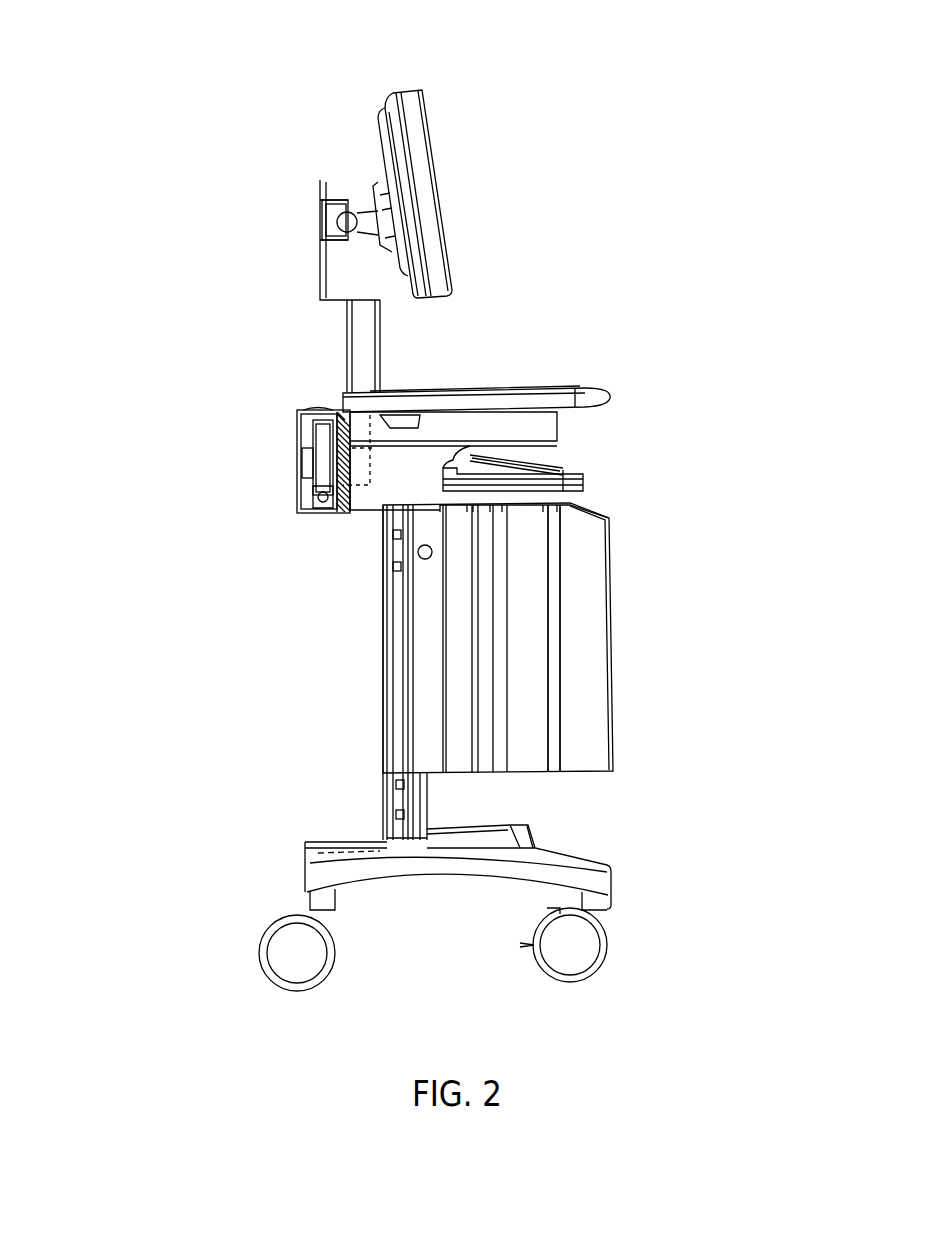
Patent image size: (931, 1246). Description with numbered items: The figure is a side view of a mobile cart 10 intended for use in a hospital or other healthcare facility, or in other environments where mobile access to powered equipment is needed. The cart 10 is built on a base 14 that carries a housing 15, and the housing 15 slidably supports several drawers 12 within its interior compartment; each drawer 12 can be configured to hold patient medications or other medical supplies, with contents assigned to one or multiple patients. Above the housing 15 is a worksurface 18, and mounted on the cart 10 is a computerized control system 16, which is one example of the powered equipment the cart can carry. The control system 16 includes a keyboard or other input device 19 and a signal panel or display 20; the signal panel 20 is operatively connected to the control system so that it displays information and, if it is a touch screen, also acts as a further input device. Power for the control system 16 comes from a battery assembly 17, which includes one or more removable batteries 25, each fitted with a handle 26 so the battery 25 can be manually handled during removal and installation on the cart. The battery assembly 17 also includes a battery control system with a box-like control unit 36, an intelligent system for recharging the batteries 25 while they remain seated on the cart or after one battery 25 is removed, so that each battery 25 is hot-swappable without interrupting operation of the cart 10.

The mobile cart 10 is at (150, 167).
The drawers 12 is at (608, 593).
The base 14 is at (505, 865).
The housing 15 is at (590, 732).
The computerized control system 16 is at (518, 246).
The battery assembly 17 is at (313, 513).
The worksurface 18 is at (540, 378).
The keyboard or other input device 19 is at (567, 467).
The signal panel or display 20 is at (423, 90).
The removable batteries 25 is at (308, 435).
The handles 26 is at (318, 493).
The control unit 36 is at (348, 415).